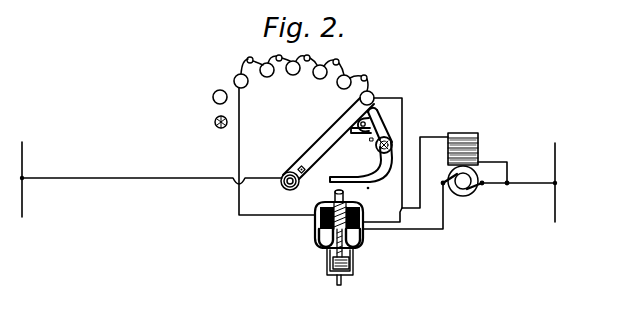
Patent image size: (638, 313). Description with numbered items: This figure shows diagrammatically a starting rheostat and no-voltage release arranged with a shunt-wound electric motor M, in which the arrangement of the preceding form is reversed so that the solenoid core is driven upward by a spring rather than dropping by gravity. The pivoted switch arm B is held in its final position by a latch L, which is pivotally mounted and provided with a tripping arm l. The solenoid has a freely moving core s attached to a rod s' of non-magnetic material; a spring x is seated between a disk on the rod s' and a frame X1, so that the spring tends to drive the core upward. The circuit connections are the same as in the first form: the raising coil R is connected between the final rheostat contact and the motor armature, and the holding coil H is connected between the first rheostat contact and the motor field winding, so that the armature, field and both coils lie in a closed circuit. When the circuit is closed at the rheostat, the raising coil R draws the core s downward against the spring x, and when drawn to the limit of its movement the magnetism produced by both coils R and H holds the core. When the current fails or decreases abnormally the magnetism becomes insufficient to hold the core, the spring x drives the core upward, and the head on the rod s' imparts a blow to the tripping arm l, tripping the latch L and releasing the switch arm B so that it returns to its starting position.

The pivoted switch arm B is at (327, 144).
The latch L is at (372, 130).
The tripping arm l is at (373, 162).
The shunt-wound electric motor M is at (463, 137).
The holding coil H is at (315, 210).
The raising coil R is at (315, 227).
The core s is at (352, 192).
The frame X1 is at (327, 256).
The spring x is at (351, 263).
The rod s' is at (321, 279).